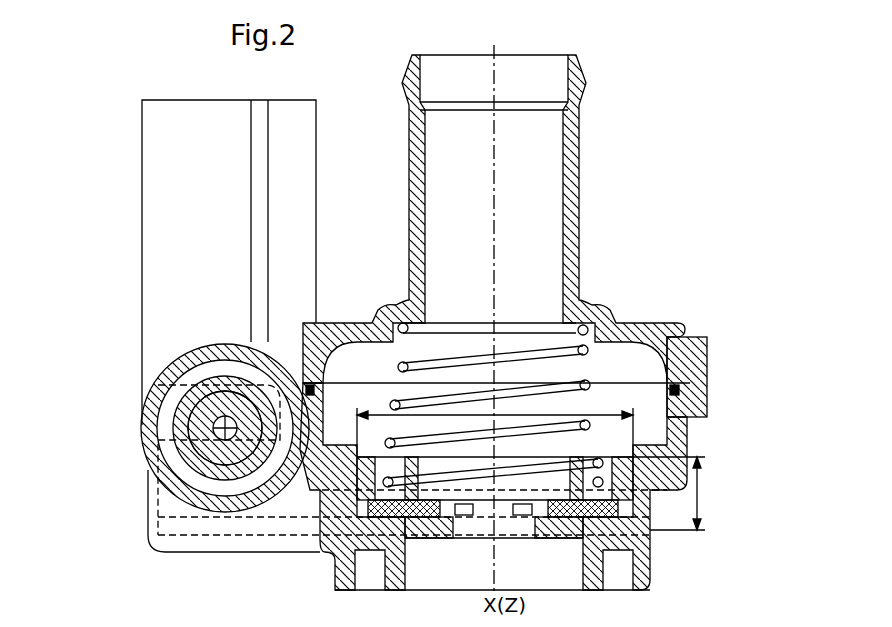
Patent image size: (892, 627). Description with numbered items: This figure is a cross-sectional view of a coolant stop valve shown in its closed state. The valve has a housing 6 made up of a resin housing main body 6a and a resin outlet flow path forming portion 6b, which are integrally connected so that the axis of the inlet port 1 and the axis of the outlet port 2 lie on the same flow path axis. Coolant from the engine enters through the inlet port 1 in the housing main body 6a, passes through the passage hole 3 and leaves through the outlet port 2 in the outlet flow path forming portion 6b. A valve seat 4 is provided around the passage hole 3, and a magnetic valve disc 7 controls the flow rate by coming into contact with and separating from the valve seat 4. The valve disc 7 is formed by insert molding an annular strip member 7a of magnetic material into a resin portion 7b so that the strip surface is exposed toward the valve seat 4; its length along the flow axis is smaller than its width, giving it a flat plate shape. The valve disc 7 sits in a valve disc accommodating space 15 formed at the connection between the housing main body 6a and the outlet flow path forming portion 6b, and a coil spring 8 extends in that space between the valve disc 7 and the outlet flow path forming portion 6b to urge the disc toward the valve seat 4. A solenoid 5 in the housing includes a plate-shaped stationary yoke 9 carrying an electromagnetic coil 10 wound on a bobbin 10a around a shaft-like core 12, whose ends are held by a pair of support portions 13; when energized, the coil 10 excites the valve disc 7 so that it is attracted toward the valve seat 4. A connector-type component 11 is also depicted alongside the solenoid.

The inlet port 1 is at (560, 572).
The outlet port 2 is at (531, 196).
The passage hole 3 is at (430, 538).
The valve seat 4 is at (577, 530).
The solenoid 5 is at (205, 340).
The housing 6 is at (668, 320).
The housing main body 6a is at (645, 540).
The outlet flow path forming portion 6b is at (406, 152).
The valve disc 7 is at (790, 455).
The annular strip member 7a is at (612, 497).
The resin portion 7b is at (640, 452).
The coil spring 8 is at (523, 323).
The stationary yoke 9 is at (255, 552).
The electromagnetic coil 10 is at (188, 378).
The bobbin 10a is at (173, 477).
The actuator unit 11 is at (152, 172).
The core 12 is at (225, 430).
The support portions 13 is at (312, 493).
The valve disc accommodating space 15 is at (363, 362).